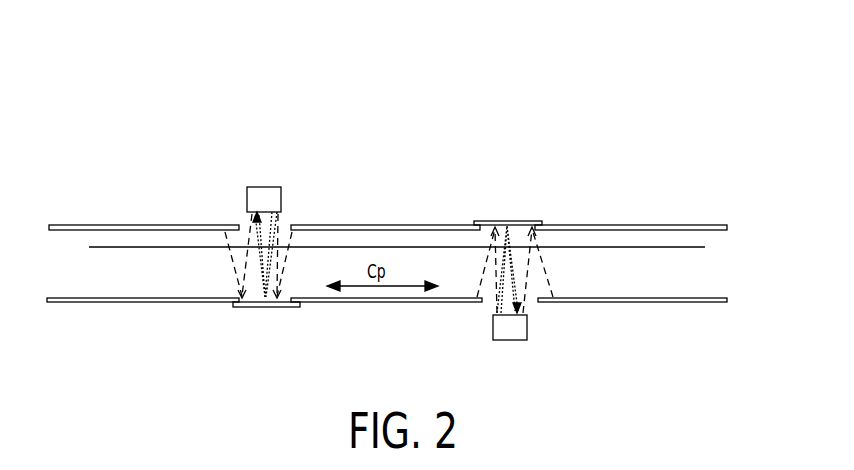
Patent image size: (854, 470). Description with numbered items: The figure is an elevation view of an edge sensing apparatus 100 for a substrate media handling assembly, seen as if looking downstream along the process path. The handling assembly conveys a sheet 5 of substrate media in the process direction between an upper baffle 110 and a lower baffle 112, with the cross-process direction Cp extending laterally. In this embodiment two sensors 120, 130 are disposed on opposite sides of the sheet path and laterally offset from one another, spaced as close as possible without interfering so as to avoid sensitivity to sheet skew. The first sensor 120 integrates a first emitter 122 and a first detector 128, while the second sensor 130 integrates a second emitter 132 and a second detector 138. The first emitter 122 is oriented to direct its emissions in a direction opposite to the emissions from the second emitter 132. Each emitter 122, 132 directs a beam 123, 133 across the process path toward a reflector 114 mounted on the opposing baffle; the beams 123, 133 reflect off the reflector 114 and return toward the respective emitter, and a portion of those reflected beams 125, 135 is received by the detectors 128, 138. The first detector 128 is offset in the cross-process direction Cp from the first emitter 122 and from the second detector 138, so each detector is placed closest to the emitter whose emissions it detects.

The edge sensing apparatus 100 is at (98, 103).
The upper baffle 110 is at (122, 225).
The sheet 5 is at (108, 247).
The lower baffle 112 is at (110, 302).
The reflector 114 is at (287, 307).
The first sensor 120 is at (262, 187).
The first emitter 122 is at (253, 215).
The first detector 128 is at (283, 213).
The beam 123 is at (232, 268).
The reflected beam portion 125 is at (281, 230).
The second sensor 130 is at (512, 340).
The second detector 138 is at (495, 313).
The second emitter 132 is at (527, 315).
The reflected beam portion 135 is at (498, 283).
The beam 133 is at (548, 275).